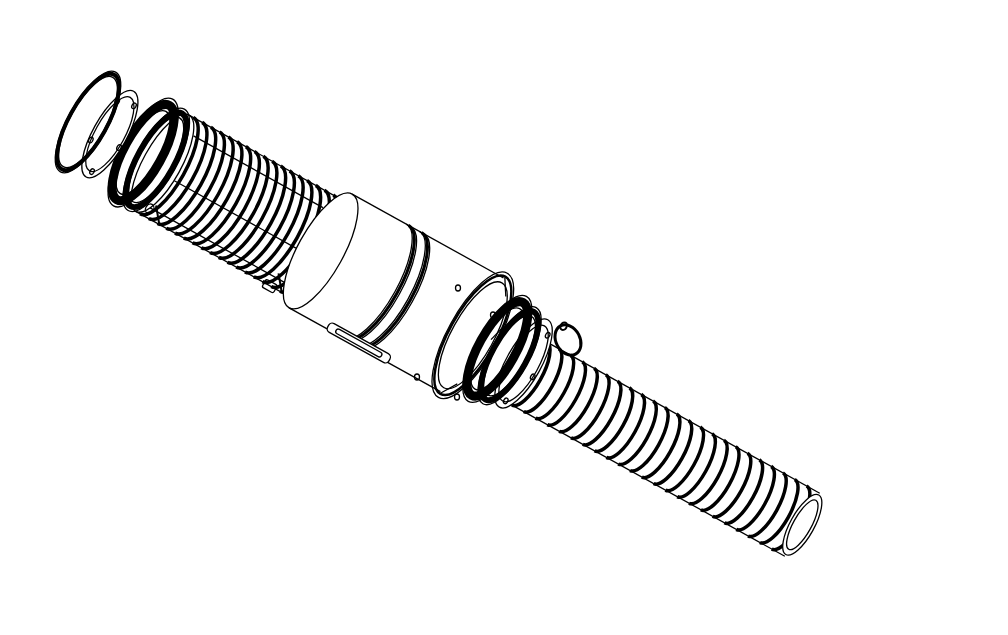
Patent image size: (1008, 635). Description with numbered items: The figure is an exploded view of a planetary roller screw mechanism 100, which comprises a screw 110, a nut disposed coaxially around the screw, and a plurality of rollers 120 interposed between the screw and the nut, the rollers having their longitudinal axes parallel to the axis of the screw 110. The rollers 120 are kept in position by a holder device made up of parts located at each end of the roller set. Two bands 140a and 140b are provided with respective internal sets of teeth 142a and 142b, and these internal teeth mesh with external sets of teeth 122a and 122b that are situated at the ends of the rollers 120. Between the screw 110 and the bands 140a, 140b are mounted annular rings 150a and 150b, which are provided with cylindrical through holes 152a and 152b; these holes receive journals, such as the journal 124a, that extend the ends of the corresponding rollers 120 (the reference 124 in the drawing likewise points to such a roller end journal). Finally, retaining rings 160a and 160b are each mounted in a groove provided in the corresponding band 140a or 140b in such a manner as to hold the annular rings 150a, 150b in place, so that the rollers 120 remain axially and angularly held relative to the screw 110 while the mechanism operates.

The roller screw mechanism 100 is at (528, 119).
The screw 110 is at (800, 540).
The rollers 120 is at (212, 253).
The external set of teeth 122a is at (153, 228).
The external set of teeth 122b is at (256, 284).
The tab 124 is at (270, 287).
The journal 124a is at (150, 208).
The band 140a is at (167, 103).
The band 140b is at (520, 298).
The internal set of teeth 142a is at (195, 113).
The internal set of teeth 142b is at (530, 310).
The annular ring 150a is at (143, 100).
The annular ring 150b is at (548, 320).
The cylindrical through holes 152a is at (137, 92).
The cylindrical through holes 152b is at (567, 320).
The retaining ring 160a is at (118, 76).
The retaining ring 160b is at (583, 335).